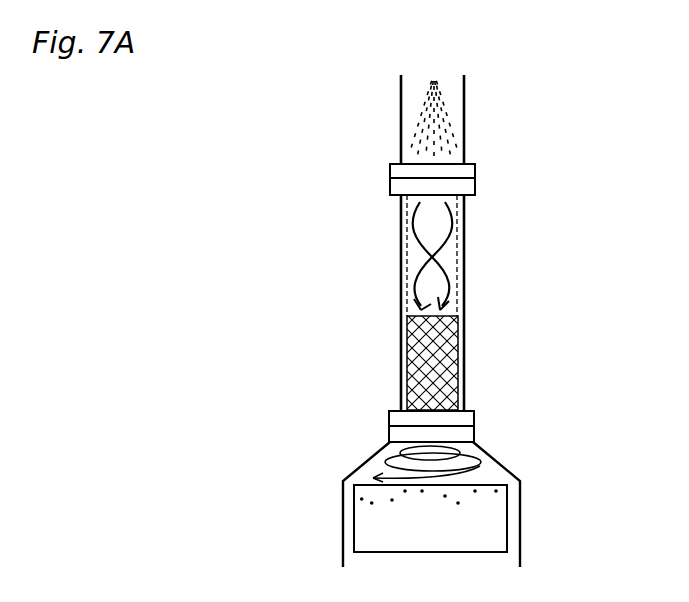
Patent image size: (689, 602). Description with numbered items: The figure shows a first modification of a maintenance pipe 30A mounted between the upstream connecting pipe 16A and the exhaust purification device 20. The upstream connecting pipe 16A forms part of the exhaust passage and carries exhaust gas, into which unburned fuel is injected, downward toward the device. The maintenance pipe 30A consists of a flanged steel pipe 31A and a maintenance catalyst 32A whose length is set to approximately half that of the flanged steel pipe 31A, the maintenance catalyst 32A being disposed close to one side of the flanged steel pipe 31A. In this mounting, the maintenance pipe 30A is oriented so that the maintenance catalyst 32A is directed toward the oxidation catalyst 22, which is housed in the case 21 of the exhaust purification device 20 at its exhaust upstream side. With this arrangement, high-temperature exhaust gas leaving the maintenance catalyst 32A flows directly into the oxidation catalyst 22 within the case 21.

The upstream connecting pipe 16A is at (400, 112).
The maintenance pipe 30A is at (392, 293).
The flanged steel pipe 31A is at (464, 245).
The maintenance catalyst 32A is at (445, 358).
The exhaust purification device 20 is at (542, 502).
The case 21 is at (493, 465).
The oxidation catalyst 22 is at (419, 539).